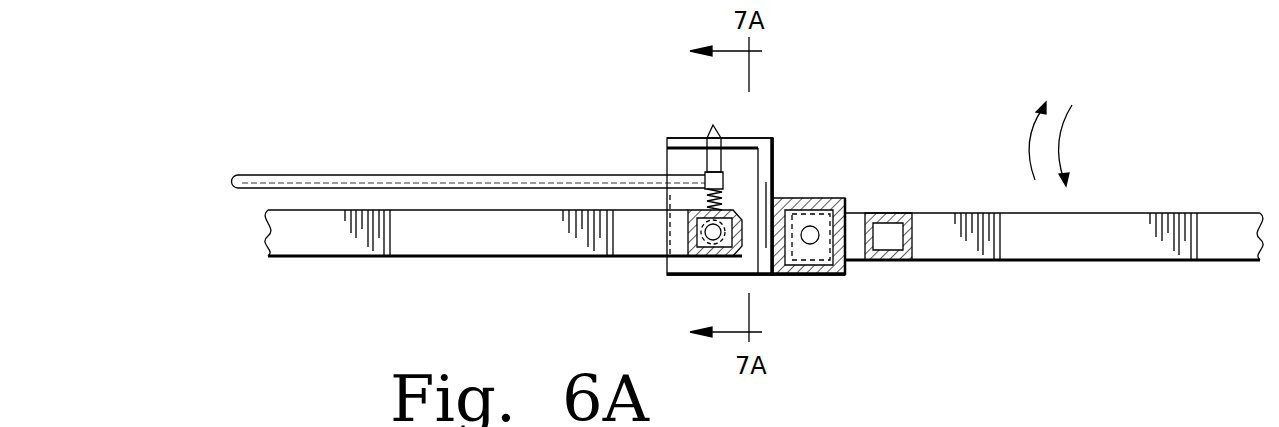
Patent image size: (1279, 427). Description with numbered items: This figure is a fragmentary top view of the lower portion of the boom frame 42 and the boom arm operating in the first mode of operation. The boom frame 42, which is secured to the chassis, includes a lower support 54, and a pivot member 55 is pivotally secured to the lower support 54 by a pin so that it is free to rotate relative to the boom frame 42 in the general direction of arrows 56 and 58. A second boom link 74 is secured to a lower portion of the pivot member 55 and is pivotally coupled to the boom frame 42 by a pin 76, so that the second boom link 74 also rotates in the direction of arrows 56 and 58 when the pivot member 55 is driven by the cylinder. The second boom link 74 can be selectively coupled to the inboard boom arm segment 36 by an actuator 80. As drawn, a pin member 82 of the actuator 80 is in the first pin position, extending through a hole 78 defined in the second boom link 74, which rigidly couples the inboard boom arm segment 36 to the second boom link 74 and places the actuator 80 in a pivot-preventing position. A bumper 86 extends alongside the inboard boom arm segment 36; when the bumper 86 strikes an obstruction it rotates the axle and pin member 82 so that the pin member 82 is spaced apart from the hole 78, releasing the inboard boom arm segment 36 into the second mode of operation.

The inboard boom arm segment 36 is at (458, 243).
The boom frame 42 is at (1210, 222).
The lower support 54 is at (831, 238).
The pivot member 55 is at (838, 199).
The arrow 56 is at (1060, 140).
The arrow 58 is at (1030, 148).
The second boom link 74 is at (756, 189).
The pin 76 is at (713, 238).
The hole 78 is at (722, 143).
The actuator 80 is at (469, 138).
The pin member 82 is at (713, 128).
The bumper 86 is at (400, 170).